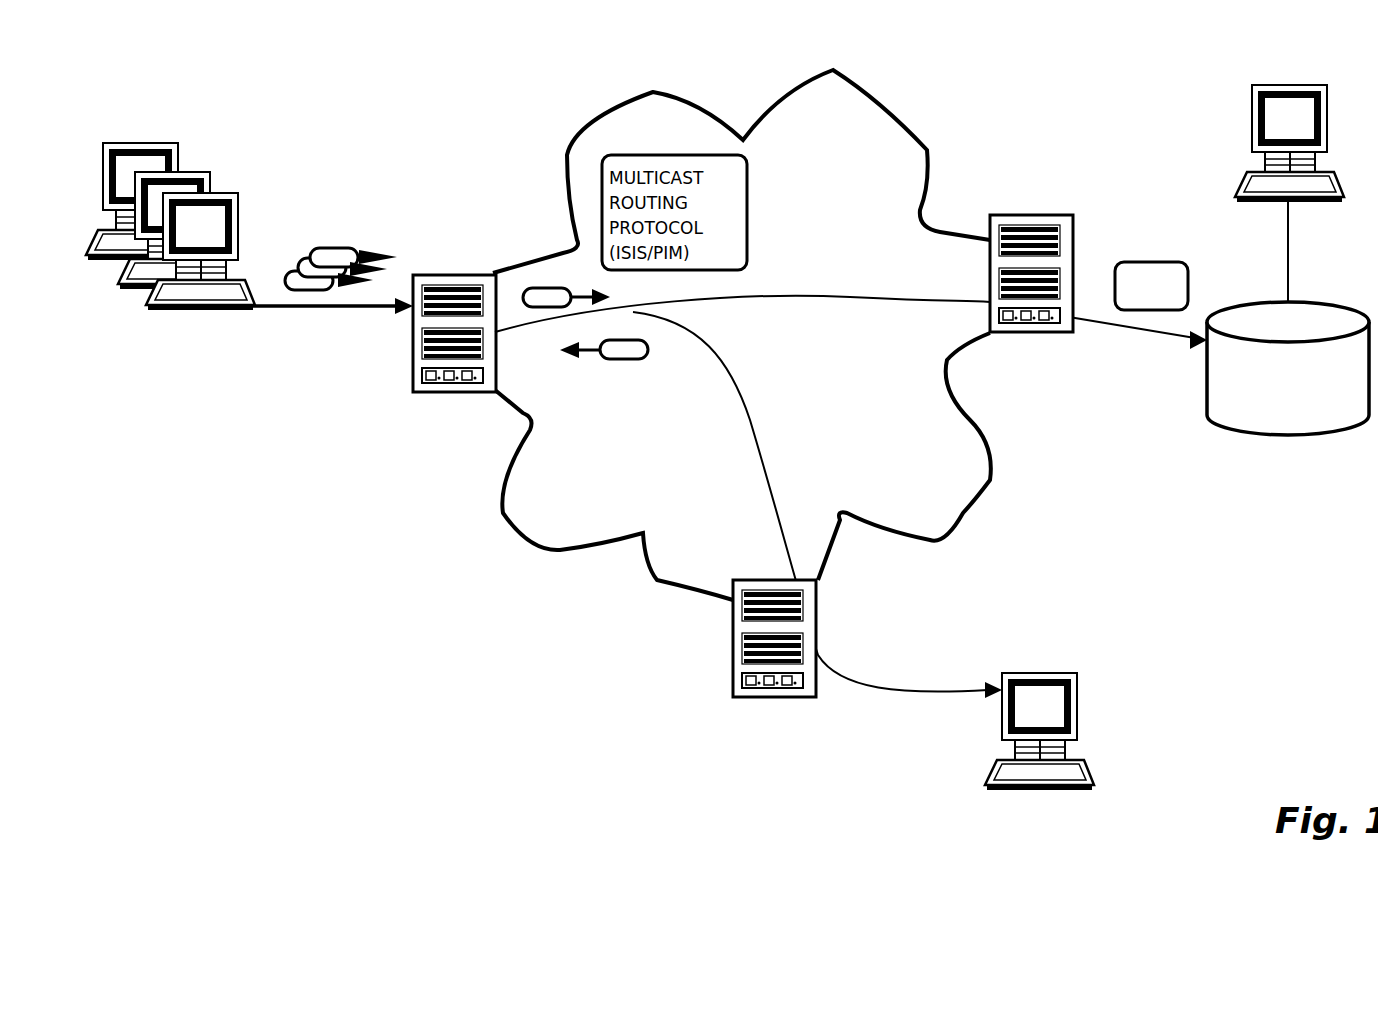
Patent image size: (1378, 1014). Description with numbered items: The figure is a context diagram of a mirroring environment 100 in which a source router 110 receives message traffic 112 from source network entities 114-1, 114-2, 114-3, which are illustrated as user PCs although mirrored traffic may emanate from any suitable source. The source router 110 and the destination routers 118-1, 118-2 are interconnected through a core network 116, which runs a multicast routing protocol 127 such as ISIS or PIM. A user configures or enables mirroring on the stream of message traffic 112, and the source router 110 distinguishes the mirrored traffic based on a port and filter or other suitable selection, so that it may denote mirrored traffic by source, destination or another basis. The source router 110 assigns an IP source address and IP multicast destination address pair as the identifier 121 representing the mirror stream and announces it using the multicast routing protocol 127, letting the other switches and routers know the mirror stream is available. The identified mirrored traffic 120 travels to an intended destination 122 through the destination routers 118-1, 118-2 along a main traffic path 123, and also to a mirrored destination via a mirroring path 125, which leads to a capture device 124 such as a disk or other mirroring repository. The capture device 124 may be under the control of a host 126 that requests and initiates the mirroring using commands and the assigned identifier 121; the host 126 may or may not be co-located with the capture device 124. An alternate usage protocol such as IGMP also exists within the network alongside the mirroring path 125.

The mirroring environment 100 is at (415, 615).
The source router 110 is at (413, 390).
The message traffic 112 is at (340, 243).
The source network entity 114-1 is at (238, 205).
The source network entity 114-2 is at (208, 185).
The source network entity 114-3 is at (178, 150).
The core network 116 is at (738, 130).
The destination router 118-1 is at (733, 640).
The destination router 118-2 is at (1052, 215).
The identified mirrored traffic 120 is at (547, 288).
The assigned identifier 121 is at (630, 362).
The intended destination 122 is at (1077, 685).
The main traffic path 123 is at (747, 408).
The capture device 124 is at (1288, 432).
The mirroring path 125 is at (840, 297).
The host 126 is at (1252, 100).
The multicast routing protocol 127 is at (1160, 262).